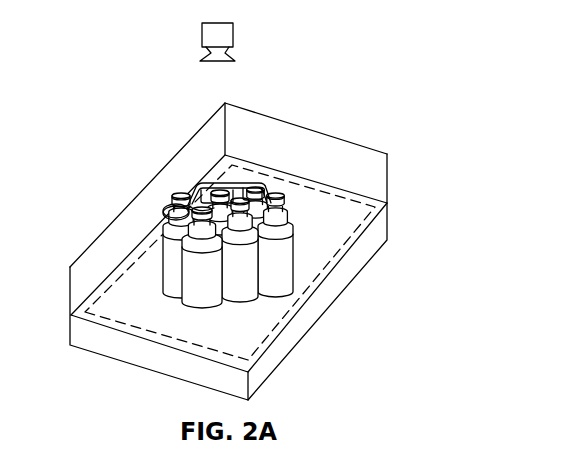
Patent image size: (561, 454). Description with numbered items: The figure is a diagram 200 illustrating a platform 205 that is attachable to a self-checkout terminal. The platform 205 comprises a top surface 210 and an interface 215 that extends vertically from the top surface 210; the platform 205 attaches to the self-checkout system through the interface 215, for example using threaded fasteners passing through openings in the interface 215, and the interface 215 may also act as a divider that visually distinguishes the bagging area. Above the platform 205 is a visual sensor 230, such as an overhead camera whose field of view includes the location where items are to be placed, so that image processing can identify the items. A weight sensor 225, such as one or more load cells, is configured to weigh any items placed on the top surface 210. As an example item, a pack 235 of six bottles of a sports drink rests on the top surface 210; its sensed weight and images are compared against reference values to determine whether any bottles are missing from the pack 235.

The diagram 200 is at (407, 103).
The platform 205 is at (280, 361).
The top surface 210 is at (337, 233).
The interface 215 is at (128, 213).
The weight sensor 225 is at (135, 327).
The visual sensor 230 is at (235, 35).
The pack 235 is at (287, 217).